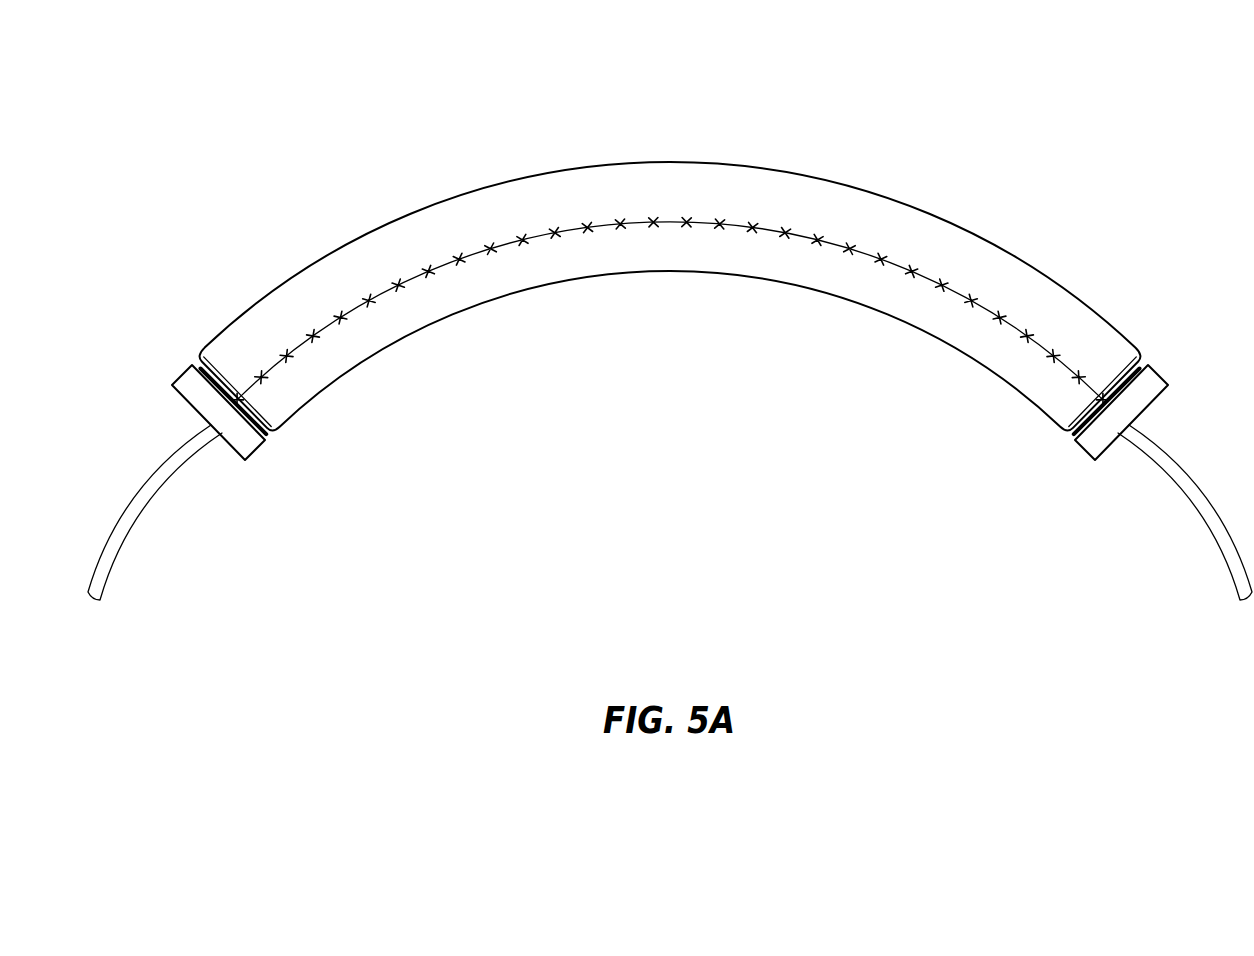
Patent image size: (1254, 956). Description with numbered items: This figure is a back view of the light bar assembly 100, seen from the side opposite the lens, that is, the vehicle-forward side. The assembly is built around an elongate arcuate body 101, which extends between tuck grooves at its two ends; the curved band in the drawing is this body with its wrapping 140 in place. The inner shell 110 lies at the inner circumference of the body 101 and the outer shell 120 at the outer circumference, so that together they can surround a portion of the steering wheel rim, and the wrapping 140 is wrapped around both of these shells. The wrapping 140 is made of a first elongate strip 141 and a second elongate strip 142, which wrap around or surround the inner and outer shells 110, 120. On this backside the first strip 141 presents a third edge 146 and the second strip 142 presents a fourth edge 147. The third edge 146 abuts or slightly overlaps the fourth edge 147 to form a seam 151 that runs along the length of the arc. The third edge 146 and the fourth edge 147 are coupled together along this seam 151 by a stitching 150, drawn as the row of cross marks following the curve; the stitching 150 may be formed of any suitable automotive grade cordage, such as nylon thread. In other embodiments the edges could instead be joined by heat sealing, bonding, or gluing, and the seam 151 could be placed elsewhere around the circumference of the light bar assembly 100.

The light bar assembly 100 is at (946, 104).
The body 101 is at (670, 163).
The inner shell 110 is at (333, 350).
The outer shell 120 is at (297, 293).
The wrapping 140 is at (583, 167).
The first elongate strip 141 is at (582, 275).
The second elongate strip 142 is at (458, 202).
The third edge 146 is at (980, 310).
The fourth edge 147 is at (835, 238).
The stitching 150 is at (883, 252).
The seam 151 is at (928, 272).